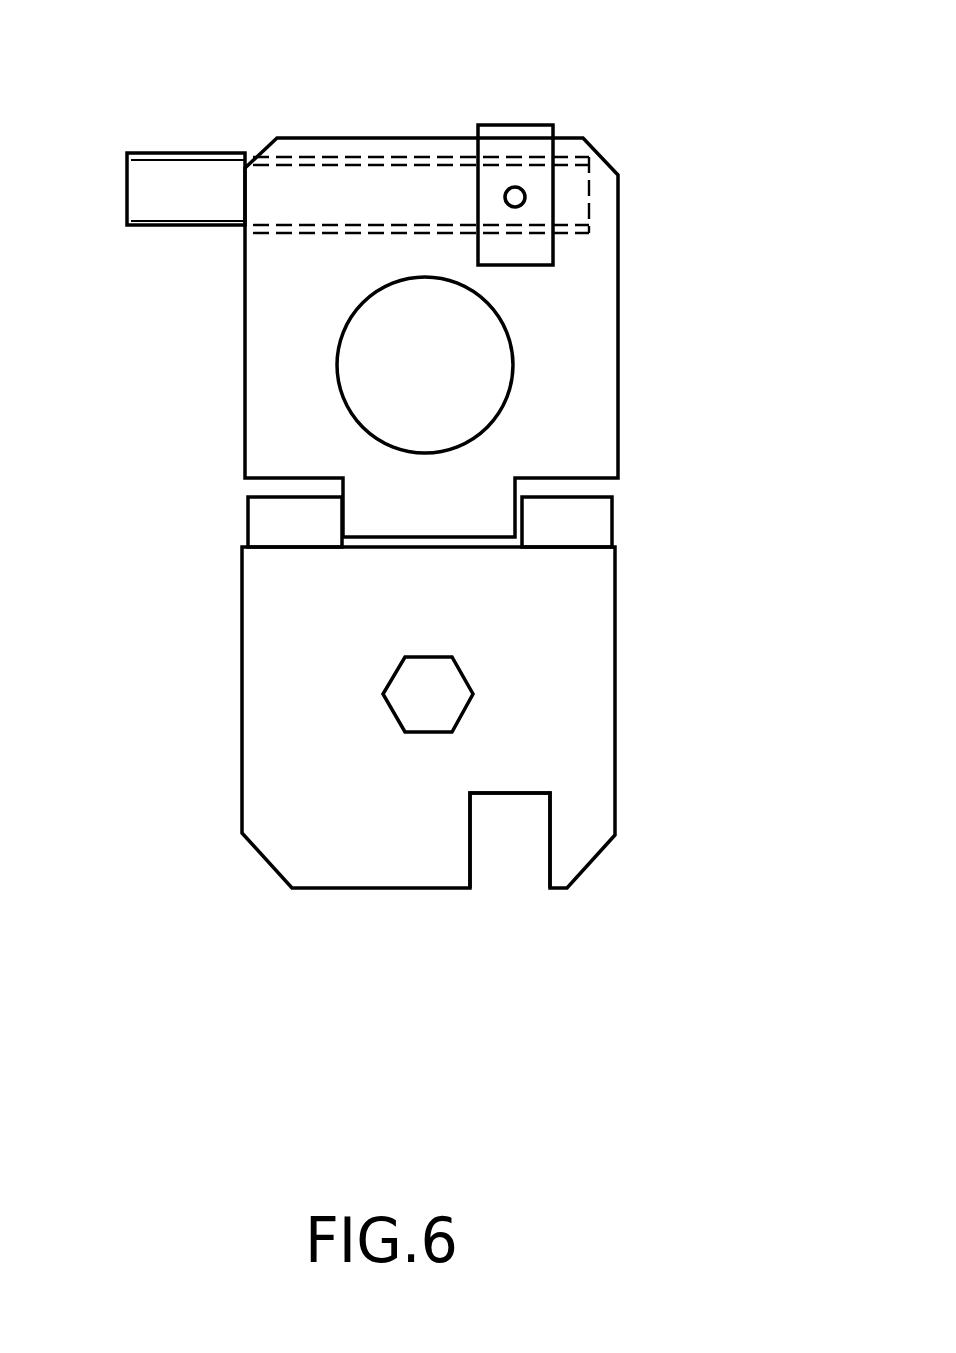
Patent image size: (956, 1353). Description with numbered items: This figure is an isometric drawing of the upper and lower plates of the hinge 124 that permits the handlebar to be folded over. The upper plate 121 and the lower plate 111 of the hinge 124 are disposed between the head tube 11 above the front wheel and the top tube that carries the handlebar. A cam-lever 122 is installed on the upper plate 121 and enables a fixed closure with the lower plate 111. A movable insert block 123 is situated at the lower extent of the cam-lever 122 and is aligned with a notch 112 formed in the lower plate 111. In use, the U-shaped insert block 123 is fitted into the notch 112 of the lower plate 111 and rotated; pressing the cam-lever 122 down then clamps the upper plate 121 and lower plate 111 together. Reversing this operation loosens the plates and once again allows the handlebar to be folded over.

The head tube 11 is at (433, 715).
The lower plate 111 is at (587, 645).
The notch 112 is at (515, 842).
The upper plate 121 is at (603, 317).
The cam-lever 122 is at (190, 165).
The insert block 123 is at (528, 122).
The hinge 124 is at (593, 523).